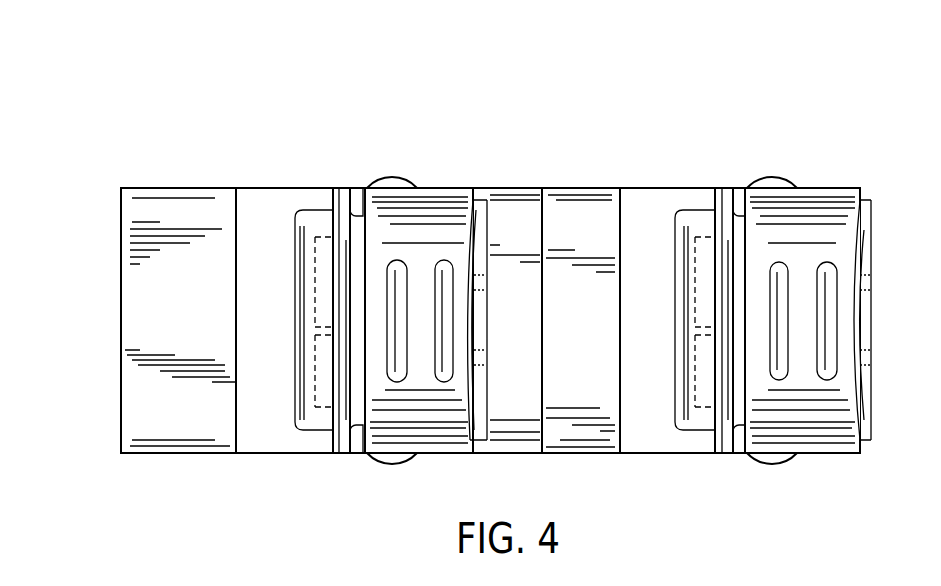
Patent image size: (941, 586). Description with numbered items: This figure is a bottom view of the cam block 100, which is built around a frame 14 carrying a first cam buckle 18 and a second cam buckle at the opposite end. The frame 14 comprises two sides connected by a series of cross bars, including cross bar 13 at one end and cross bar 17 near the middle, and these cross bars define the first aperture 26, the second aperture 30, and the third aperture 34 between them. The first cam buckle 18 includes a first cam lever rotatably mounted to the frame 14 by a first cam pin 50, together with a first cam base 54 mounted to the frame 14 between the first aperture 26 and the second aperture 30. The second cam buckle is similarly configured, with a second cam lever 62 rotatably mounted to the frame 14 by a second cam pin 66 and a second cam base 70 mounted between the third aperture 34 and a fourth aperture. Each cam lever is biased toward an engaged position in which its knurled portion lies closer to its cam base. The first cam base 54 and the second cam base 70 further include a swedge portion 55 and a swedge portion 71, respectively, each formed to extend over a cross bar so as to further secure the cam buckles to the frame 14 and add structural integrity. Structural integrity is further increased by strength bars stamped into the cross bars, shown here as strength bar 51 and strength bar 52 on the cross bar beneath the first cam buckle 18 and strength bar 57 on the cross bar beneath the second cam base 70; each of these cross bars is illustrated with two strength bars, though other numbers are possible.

The cam block 100 is at (270, 92).
The first cam buckle 18 is at (349, 166).
The cross bar 13 is at (200, 322).
The frame 14 is at (176, 440).
The first aperture 26 is at (268, 335).
The first cam base 54 is at (335, 440).
The first cam pin 50 is at (416, 352).
The strength bar 51 is at (402, 313).
The slot 52 is at (451, 370).
The swedge portion 55 is at (487, 330).
The cross bar 17 is at (582, 333).
The second aperture 30 is at (513, 290).
The third aperture 34 is at (645, 326).
The second cam lever 62 is at (700, 418).
The second cam base 70 is at (728, 420).
The second cam pin 66 is at (802, 347).
The strength bar 57 is at (823, 335).
The swedge portion 71 is at (864, 343).